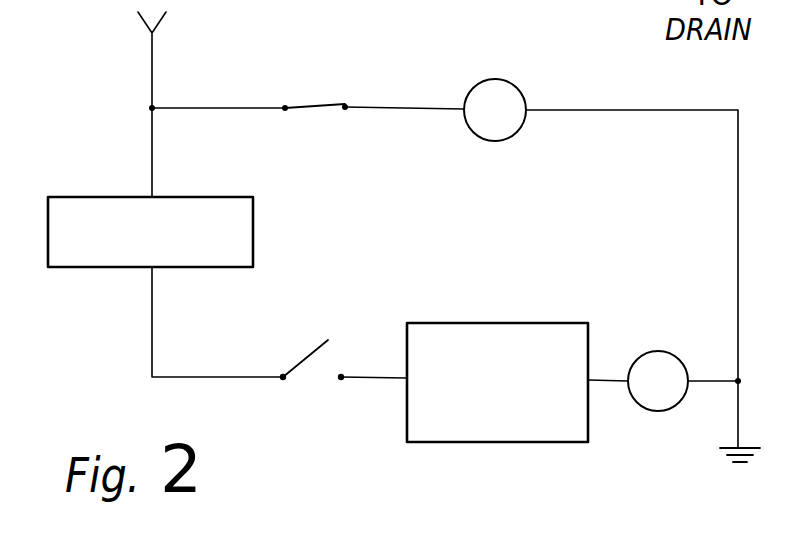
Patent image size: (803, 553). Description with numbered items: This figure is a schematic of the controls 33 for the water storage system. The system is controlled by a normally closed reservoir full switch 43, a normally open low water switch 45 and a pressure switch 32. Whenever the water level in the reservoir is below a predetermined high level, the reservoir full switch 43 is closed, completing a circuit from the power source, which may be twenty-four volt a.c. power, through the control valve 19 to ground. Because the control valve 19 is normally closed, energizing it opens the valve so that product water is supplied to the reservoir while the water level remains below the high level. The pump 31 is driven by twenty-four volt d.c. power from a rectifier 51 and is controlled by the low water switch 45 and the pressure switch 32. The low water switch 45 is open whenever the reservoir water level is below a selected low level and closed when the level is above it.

The control valve 19 is at (480, 84).
The pump 31 is at (643, 412).
The pressure switch 32 is at (521, 323).
The controls 33 is at (597, 96).
The reservoir full switch 43 is at (308, 104).
The low water switch 45 is at (307, 352).
The rectifier 51 is at (120, 197).